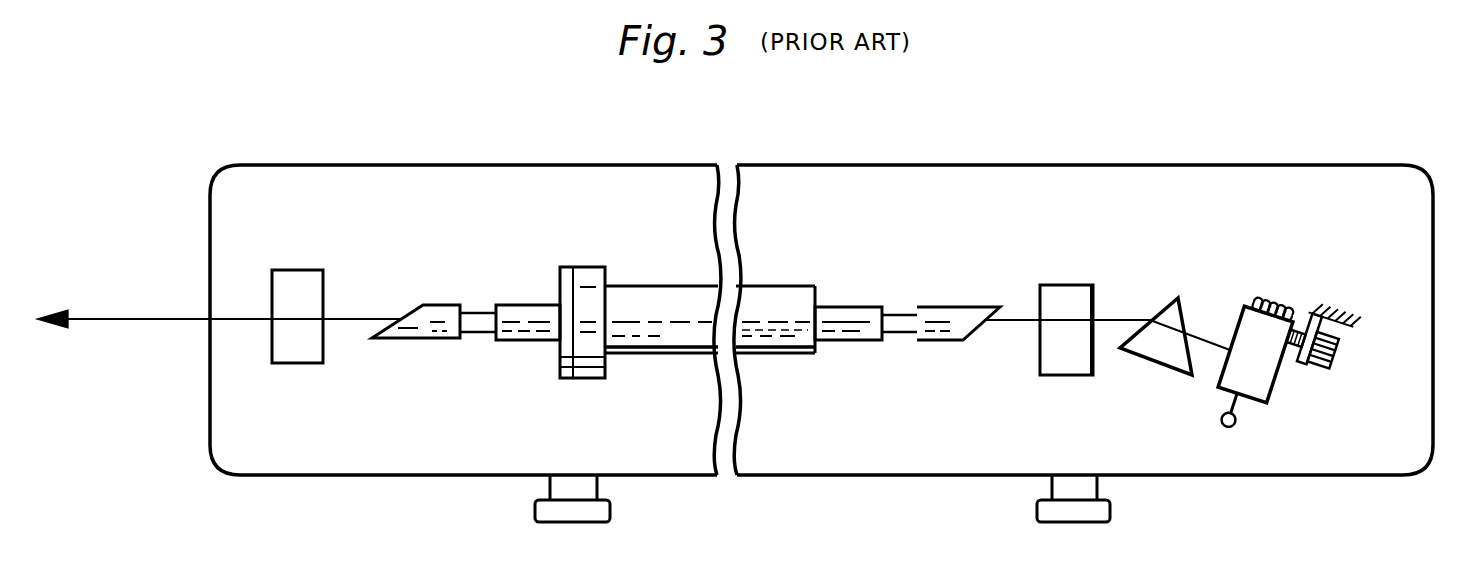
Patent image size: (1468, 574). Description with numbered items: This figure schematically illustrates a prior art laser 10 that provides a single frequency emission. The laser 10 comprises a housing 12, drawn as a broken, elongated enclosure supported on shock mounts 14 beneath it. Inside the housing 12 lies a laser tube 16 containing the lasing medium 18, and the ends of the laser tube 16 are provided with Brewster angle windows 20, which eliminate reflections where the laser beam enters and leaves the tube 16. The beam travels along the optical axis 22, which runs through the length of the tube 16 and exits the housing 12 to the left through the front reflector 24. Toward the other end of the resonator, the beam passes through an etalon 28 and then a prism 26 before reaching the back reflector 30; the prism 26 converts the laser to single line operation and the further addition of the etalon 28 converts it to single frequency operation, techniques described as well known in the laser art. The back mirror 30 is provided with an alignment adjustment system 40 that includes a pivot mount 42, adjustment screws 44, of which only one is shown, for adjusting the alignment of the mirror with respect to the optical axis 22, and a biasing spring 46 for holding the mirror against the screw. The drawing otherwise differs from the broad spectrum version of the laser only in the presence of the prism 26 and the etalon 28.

The laser 10 is at (438, 130).
The housing 12 is at (783, 165).
The shock mounts 14 is at (610, 507).
The laser tube 16 is at (783, 287).
The lasing medium 18 is at (788, 302).
The Brewster angle windows 20 is at (404, 322).
The optical axis 22 is at (1022, 320).
The front reflector 24 is at (323, 355).
The prism 26 is at (1143, 357).
The etalon 28 is at (1073, 285).
The back reflector 30 is at (1215, 385).
The alignment adjustment system 40 is at (1390, 287).
The pivot mount 42 is at (1238, 426).
The adjustment screws 44 is at (1318, 366).
The biasing spring 46 is at (1267, 298).